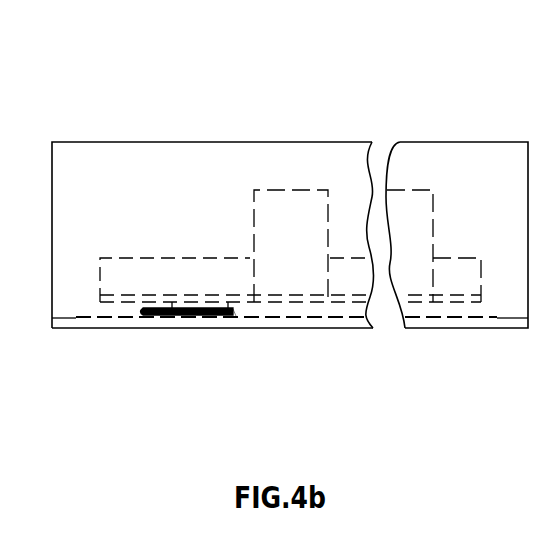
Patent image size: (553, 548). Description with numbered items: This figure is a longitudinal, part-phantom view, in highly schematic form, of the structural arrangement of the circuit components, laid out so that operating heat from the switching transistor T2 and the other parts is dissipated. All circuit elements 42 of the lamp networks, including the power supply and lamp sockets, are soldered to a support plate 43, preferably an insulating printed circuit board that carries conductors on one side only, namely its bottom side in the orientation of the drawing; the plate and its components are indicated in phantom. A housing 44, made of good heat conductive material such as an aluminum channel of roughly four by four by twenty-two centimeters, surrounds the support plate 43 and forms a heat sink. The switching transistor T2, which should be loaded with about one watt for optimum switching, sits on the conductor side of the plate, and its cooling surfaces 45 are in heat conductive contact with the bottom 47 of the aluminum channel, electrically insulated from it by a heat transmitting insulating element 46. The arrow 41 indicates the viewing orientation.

The viewing direction arrow 41 is at (169, 104).
The circuit elements 42 is at (168, 268).
The support plate 43 is at (415, 298).
The housing 44 is at (52, 180).
The cooling surfaces 45 is at (139, 313).
The heat transmitting insulating element 46 is at (86, 317).
The bottom of the aluminum channel 47 is at (473, 328).
The switching transistor T2 is at (236, 312).